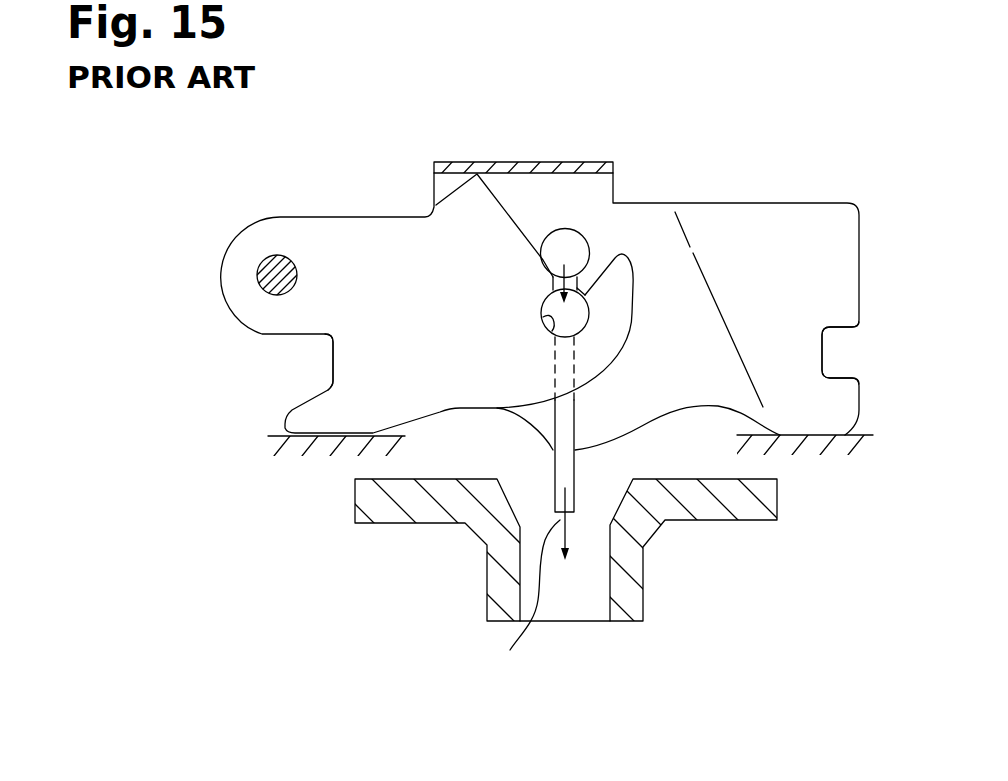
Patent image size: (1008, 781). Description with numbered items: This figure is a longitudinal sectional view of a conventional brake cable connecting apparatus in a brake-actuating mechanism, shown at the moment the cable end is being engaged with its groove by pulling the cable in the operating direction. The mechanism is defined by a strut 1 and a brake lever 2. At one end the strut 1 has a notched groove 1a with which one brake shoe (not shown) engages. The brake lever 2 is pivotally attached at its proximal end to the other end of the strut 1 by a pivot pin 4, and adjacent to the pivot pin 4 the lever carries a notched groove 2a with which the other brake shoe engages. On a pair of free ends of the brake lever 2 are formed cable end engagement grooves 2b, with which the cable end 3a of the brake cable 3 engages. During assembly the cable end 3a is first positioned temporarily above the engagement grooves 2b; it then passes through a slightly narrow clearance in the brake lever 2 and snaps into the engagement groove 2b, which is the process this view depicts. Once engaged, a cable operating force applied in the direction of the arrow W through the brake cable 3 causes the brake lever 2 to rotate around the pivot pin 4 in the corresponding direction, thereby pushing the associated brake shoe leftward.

The strut 1 is at (825, 199).
The notched groove 1a is at (822, 350).
The brake lever 2 is at (338, 212).
The notched groove 2a is at (332, 355).
The cable end engagement grooves 2b is at (543, 317).
The brake cable 3 is at (545, 461).
The cable end 3a is at (587, 290).
The pivot pin 4 is at (266, 292).
The cable operating direction W is at (518, 600).